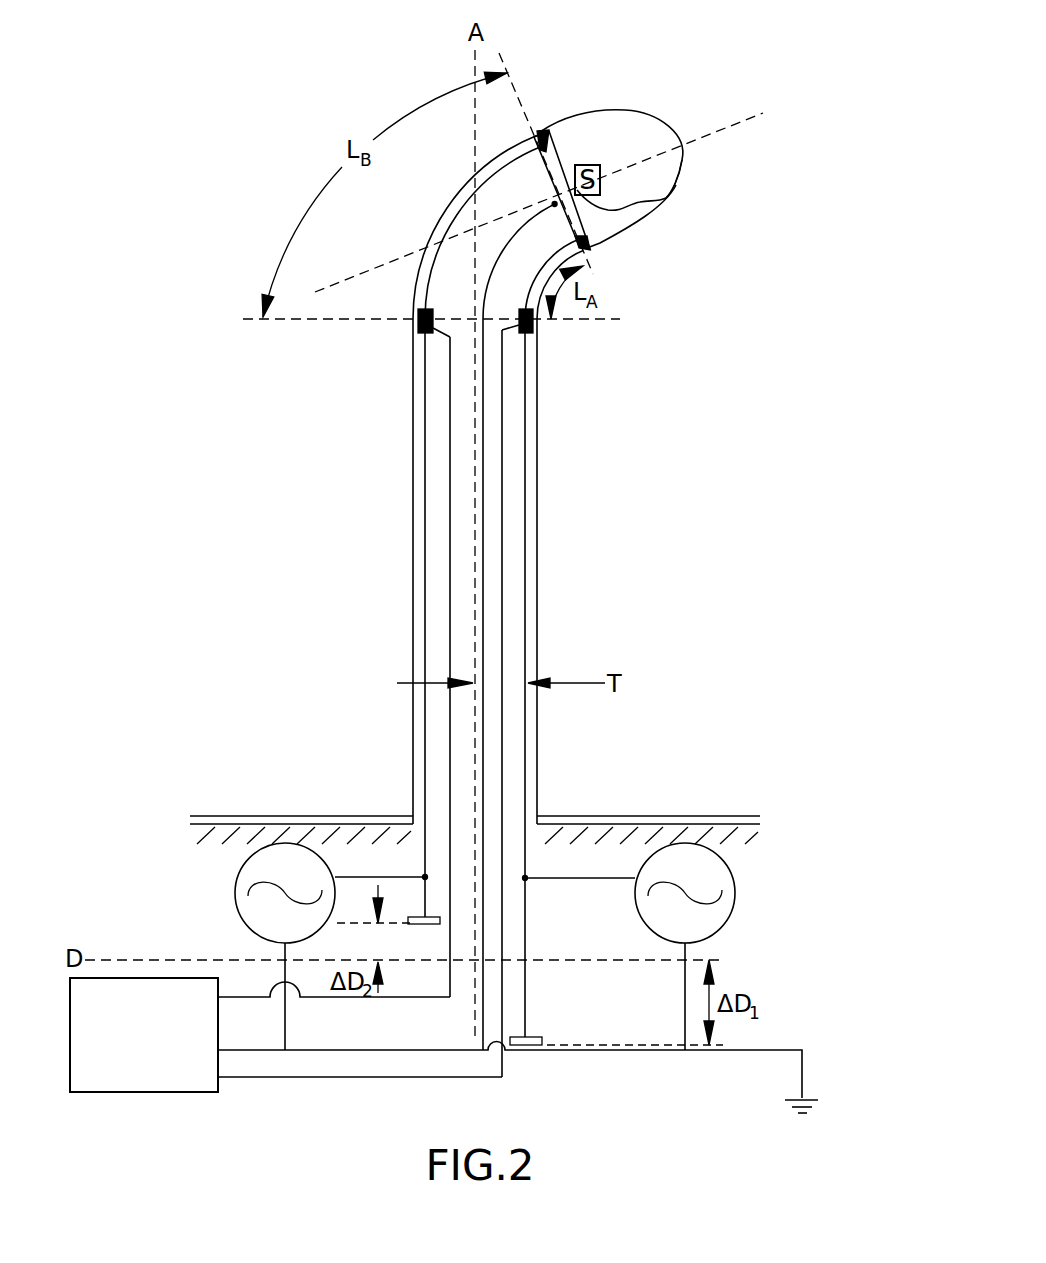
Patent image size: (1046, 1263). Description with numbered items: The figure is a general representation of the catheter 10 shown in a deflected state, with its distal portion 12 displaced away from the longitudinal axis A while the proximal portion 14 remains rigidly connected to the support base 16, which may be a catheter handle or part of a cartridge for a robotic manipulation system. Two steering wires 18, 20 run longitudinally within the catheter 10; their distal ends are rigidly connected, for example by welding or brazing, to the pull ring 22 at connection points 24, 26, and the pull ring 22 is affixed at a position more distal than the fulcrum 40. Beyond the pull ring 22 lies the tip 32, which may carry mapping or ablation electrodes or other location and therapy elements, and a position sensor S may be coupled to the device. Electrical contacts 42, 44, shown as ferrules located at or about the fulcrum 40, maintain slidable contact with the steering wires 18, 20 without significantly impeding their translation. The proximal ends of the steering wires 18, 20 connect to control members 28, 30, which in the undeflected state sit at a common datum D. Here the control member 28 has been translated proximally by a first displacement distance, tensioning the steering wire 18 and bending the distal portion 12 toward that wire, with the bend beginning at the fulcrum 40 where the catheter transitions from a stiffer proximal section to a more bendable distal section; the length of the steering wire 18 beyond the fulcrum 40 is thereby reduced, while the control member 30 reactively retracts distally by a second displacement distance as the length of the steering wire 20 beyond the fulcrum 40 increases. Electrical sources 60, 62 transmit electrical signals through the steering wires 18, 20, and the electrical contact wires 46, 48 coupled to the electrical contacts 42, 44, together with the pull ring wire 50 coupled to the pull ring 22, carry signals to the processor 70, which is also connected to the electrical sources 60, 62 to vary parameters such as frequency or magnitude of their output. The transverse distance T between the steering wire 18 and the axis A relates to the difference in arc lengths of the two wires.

The catheter 10 is at (230, 195).
The distal portion 12 is at (670, 95).
The proximal portion 14 is at (578, 625).
The support base 16 is at (665, 815).
The steering wire 18 is at (526, 413).
The steering wire 20 is at (425, 627).
The pull ring 22 is at (667, 197).
The connection point 24 is at (590, 247).
The connection point 26 is at (538, 130).
The control member 28 is at (523, 1047).
The control member 30 is at (417, 914).
The tip 32 is at (673, 168).
The fulcrum 40 is at (415, 319).
The electrical contact 42 is at (533, 325).
The electrical contact 44 is at (418, 325).
The electrical contact wire 46 is at (528, 558).
The electrical contact wire 48 is at (448, 518).
The pull ring wire 50 is at (502, 497).
The electrical source 60 is at (672, 931).
The electrical source 62 is at (272, 931).
The processor 70 is at (134, 1084).